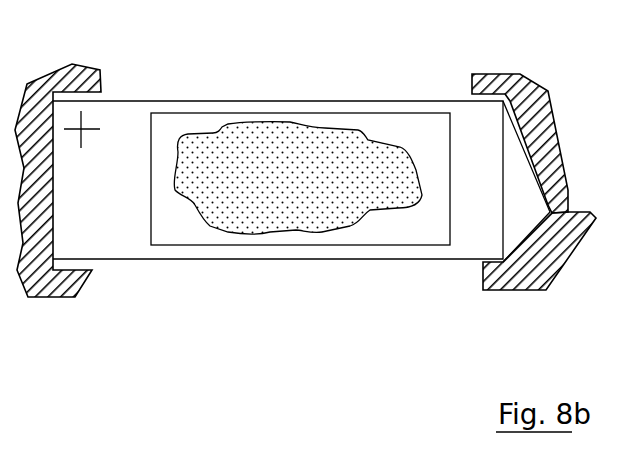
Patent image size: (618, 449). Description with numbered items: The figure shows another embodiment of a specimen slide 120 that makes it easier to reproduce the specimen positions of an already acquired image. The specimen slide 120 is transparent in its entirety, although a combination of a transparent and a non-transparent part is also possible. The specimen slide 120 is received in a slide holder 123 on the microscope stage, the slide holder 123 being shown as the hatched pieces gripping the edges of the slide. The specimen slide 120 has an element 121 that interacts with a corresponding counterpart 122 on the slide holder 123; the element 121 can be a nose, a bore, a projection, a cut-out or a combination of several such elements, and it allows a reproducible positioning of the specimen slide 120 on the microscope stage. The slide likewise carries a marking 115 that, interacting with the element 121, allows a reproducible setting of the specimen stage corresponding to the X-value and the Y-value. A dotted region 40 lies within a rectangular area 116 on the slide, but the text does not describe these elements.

The substrate / wafer 40 is at (237, 213).
The marking 115 is at (86, 128).
The window aperture 116 is at (417, 122).
The specimen slide 120 is at (277, 84).
The element 121 is at (550, 211).
The counterpart 122 is at (548, 211).
The slide holder 123 is at (53, 70).